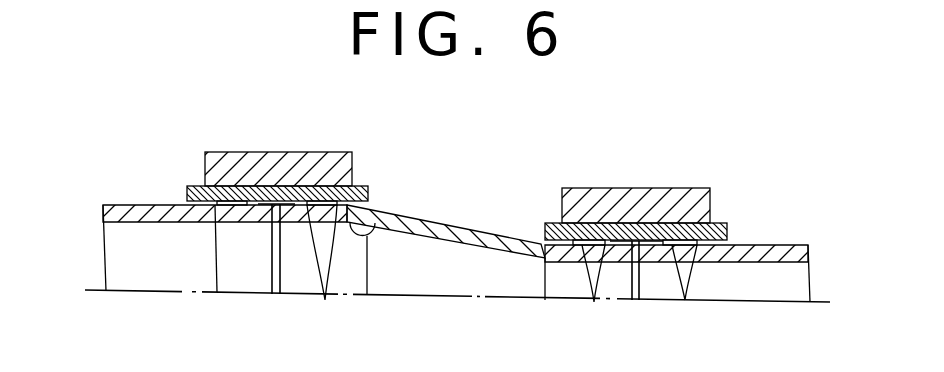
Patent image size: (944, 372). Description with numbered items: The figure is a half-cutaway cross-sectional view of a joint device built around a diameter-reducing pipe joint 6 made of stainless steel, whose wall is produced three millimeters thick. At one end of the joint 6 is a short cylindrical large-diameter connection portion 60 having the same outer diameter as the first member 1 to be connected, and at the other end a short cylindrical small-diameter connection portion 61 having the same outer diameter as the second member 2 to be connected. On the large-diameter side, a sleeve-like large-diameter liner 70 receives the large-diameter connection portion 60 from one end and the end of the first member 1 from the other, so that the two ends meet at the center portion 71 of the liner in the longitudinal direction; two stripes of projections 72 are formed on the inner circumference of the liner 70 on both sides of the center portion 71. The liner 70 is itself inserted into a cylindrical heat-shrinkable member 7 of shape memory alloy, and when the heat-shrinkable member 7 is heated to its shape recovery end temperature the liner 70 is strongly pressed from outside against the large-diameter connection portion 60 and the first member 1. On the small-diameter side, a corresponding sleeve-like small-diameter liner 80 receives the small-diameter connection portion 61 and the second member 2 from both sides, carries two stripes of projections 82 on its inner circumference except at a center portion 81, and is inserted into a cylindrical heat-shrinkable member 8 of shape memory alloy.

The first member to be connected 1 is at (137, 270).
The second member to be connected 2 is at (790, 245).
The diameter-reducing pipe joint 6 is at (494, 229).
The large-diameter connection portion 60 is at (393, 230).
The small-diameter connection portion 61 is at (558, 262).
The heat-shrinkable member 7 is at (290, 151).
The large-diameter liner 70 is at (362, 186).
The center portion 71 is at (259, 205).
The projections 72 is at (255, 205).
The heat-shrinkable member 8 is at (623, 188).
The small-diameter liner 80 is at (722, 223).
The center portion 81 is at (627, 246).
The projections 82 is at (594, 302).